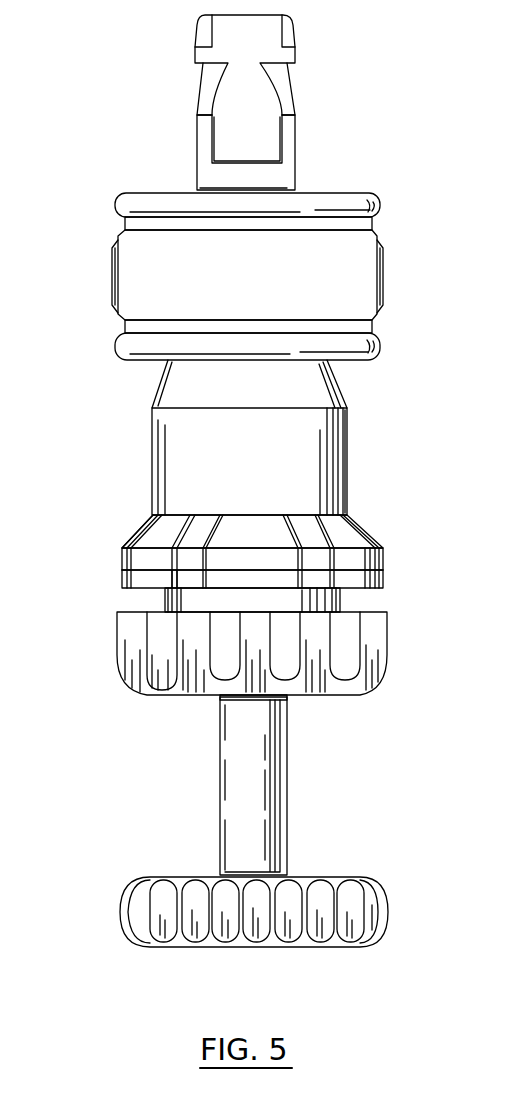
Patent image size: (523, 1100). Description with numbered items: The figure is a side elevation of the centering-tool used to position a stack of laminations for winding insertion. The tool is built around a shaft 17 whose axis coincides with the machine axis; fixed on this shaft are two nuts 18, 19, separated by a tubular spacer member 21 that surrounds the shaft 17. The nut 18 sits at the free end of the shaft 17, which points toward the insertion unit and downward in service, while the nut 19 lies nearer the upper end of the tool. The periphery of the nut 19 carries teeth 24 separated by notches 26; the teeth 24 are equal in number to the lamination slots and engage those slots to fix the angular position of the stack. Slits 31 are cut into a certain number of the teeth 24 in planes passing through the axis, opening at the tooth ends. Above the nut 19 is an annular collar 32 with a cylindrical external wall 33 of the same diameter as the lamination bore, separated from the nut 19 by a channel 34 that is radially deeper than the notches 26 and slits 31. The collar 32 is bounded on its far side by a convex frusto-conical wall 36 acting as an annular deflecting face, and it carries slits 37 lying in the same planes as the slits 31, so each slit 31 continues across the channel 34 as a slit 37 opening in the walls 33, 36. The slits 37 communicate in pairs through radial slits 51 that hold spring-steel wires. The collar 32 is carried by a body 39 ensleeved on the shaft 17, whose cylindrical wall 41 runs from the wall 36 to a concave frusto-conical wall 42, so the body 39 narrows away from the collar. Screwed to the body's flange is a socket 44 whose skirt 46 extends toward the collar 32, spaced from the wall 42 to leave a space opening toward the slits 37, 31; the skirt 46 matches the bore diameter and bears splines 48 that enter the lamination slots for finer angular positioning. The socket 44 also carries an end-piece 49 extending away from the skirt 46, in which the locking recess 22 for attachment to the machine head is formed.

The shaft 17 is at (267, 840).
The nut 18 is at (342, 870).
The nut 19 is at (221, 702).
The tubular spacer member 21 is at (270, 805).
The locking recess 22 is at (294, 71).
The teeth 24 is at (221, 694).
The notches 26 is at (235, 702).
The slits 31 is at (190, 625).
The annular collar 32 is at (270, 531).
The cylindrical external wall 33 is at (383, 567).
The channel 34 is at (358, 607).
The convex frusto-conical wall 36 is at (152, 516).
The slits 37 is at (195, 530).
The body 39 is at (308, 449).
The cylindrical wall 41 is at (347, 457).
The concave frusto-conical wall 42 is at (318, 380).
The socket 44 is at (249, 244).
The skirt 46 is at (142, 282).
The splines 48 is at (112, 262).
The end-piece 49 is at (288, 150).
The radial slits 51 is at (190, 572).